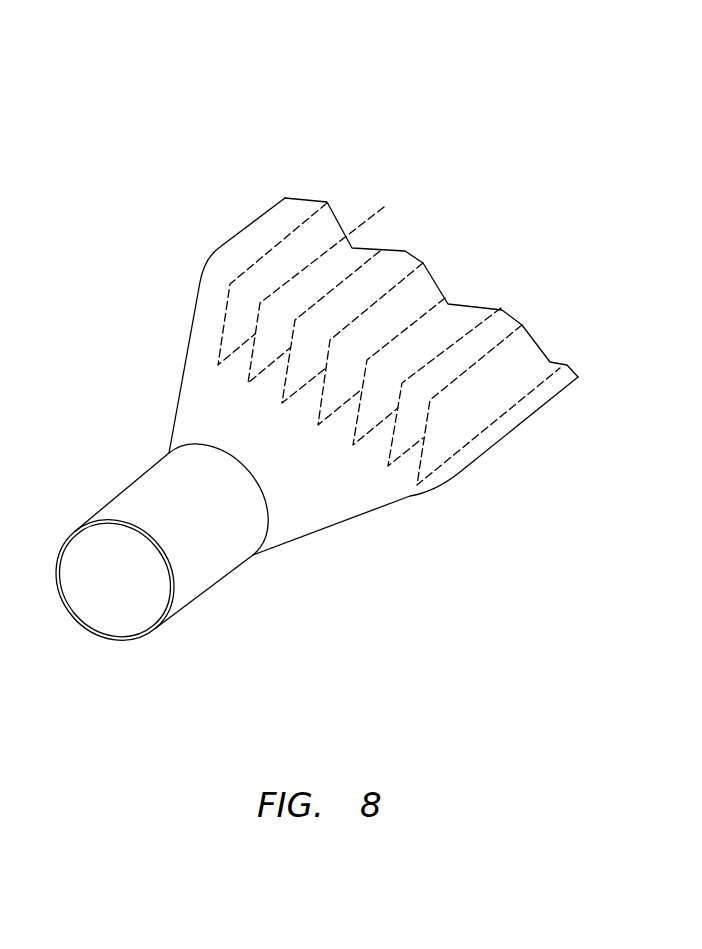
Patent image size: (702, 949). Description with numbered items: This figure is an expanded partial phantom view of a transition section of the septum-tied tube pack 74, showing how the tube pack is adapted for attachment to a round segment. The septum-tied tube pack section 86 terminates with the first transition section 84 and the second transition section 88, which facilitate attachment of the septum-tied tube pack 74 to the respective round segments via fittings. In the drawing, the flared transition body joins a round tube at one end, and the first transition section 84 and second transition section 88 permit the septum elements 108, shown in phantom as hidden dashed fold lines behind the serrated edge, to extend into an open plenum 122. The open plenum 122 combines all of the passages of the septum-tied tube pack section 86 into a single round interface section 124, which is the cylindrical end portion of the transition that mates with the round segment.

The septum-tied tube pack 74 is at (192, 108).
The first transition section 84 is at (135, 472).
The second transition section 88 is at (115, 580).
The septum-tied tube pack section 86 is at (506, 458).
The septum elements 108 is at (385, 276).
The open plenum 122 is at (325, 472).
The round interface section 124 is at (207, 575).